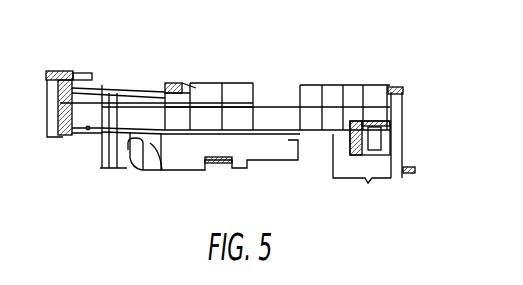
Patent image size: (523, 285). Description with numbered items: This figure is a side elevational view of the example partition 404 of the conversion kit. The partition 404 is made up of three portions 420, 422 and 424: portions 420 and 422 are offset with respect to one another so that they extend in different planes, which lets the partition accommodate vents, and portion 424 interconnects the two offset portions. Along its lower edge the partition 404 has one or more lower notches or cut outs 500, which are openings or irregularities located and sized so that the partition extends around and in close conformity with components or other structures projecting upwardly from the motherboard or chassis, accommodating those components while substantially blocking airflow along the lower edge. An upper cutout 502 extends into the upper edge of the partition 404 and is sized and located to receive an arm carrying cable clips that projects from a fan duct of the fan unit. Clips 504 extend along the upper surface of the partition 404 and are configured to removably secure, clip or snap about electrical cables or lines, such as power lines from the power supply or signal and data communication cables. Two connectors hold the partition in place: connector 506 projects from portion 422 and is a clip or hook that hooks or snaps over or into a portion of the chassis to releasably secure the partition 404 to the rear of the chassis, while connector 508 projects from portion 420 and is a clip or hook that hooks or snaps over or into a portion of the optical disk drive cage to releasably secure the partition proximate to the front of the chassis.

The partition 404 is at (410, 172).
The portion 420 is at (368, 177).
The portion 422 is at (62, 137).
The portion 424 is at (150, 168).
The lower notches or cut outs 500 is at (137, 158).
The upper cutout 502 is at (255, 94).
The clips 504 is at (199, 82).
The connector 506 is at (45, 83).
The connector 508 is at (403, 92).